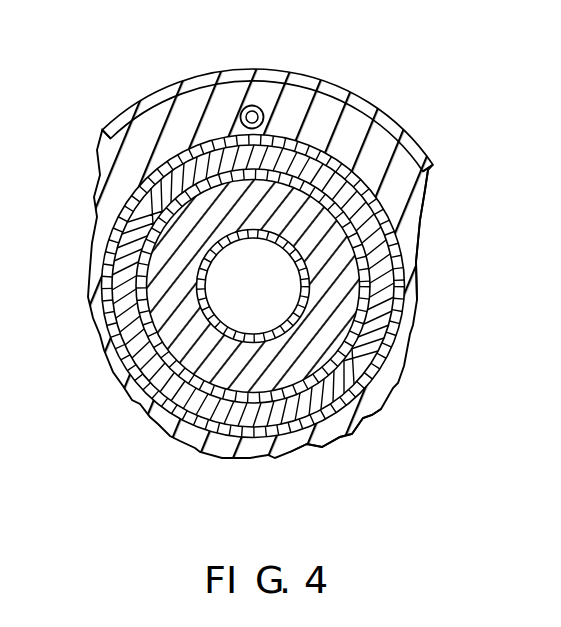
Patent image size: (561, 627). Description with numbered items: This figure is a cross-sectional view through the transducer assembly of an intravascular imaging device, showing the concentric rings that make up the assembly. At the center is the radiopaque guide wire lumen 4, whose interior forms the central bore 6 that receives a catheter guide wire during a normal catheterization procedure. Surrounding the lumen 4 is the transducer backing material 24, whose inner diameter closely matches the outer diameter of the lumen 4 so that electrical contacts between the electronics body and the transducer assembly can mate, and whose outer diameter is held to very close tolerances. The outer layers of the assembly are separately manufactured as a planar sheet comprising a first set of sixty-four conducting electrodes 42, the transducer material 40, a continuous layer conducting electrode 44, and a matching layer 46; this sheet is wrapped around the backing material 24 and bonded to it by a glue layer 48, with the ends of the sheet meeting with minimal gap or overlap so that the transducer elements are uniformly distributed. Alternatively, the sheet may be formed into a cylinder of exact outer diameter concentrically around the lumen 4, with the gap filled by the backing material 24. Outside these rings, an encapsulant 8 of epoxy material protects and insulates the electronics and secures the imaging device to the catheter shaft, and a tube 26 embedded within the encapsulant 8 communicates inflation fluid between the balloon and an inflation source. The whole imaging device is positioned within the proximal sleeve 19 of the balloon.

The radiopaque guide wire lumen 4 is at (292, 306).
The central bore 6 is at (261, 287).
The encapsulant 8 is at (147, 125).
The proximal sleeve 19 is at (354, 97).
The transducer backing material 24 is at (367, 410).
The tube 26 is at (258, 108).
The transducer material 40 is at (333, 427).
The first set of conducting electrodes 42 is at (102, 293).
The continuous layer conducting electrode 44 is at (114, 220).
The matching layer 46 is at (403, 232).
The glue layer 48 is at (300, 372).